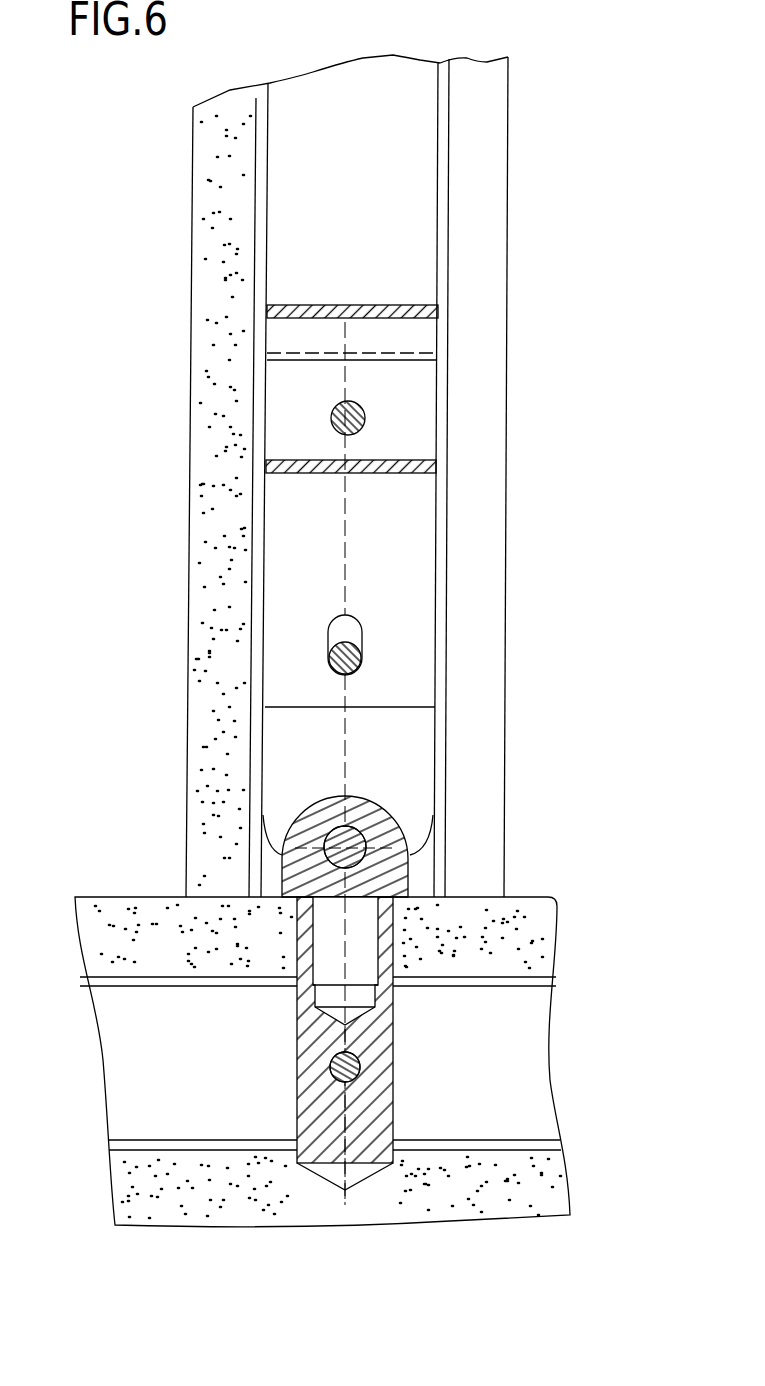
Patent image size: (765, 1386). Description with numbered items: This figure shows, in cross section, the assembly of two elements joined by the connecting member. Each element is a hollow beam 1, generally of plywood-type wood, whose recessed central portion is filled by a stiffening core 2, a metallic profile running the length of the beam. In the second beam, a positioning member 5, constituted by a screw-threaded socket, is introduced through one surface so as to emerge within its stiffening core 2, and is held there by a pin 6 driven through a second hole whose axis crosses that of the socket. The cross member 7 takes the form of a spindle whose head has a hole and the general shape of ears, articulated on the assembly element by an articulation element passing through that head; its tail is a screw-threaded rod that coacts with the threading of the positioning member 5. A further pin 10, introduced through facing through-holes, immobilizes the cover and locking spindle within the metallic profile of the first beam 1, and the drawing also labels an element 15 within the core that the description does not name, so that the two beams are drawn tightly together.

The hollow beam 1 is at (550, 1182).
The stiffening core 2 is at (478, 1140).
The positioning member 5 is at (393, 1043).
The pin 6 is at (360, 1070).
The cross member 7 is at (382, 838).
The pin 10 is at (362, 668).
The slot 15 is at (353, 633).